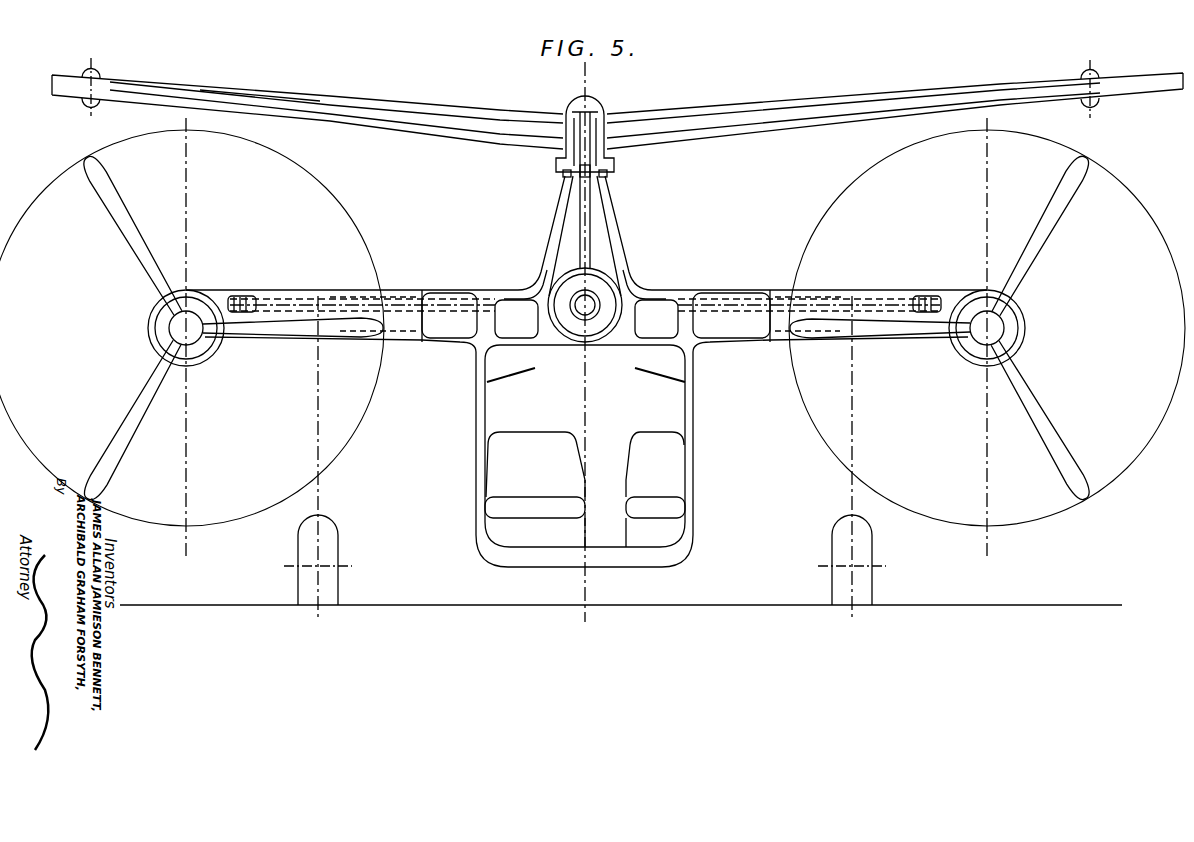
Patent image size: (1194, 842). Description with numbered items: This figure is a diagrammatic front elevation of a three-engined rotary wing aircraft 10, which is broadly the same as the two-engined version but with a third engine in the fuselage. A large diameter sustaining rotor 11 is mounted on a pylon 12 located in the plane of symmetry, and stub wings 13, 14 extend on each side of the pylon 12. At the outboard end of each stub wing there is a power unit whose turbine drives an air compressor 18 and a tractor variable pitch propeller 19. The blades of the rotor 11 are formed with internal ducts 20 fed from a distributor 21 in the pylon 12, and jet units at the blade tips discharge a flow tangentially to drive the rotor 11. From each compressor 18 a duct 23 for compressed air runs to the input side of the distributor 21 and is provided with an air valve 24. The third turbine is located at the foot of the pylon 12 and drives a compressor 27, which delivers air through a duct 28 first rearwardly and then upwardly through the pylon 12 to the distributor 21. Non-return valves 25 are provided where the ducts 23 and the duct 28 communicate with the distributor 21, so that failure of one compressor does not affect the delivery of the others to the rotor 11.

The aircraft 10 is at (476, 492).
The sustaining rotor 11 is at (312, 95).
The pylon 12 is at (613, 210).
The stub wing 13 is at (325, 292).
The stub wing 14 is at (782, 292).
The air compressor 18 is at (194, 306).
The tractor variable pitch propeller 19 is at (124, 237).
The internal ducts 20 is at (375, 114).
The distributor 21 is at (605, 132).
The duct 23 is at (553, 252).
The air valve 24 is at (242, 296).
The non-return valve 25 is at (568, 176).
The compressor 27 is at (602, 297).
The duct 28 is at (590, 253).